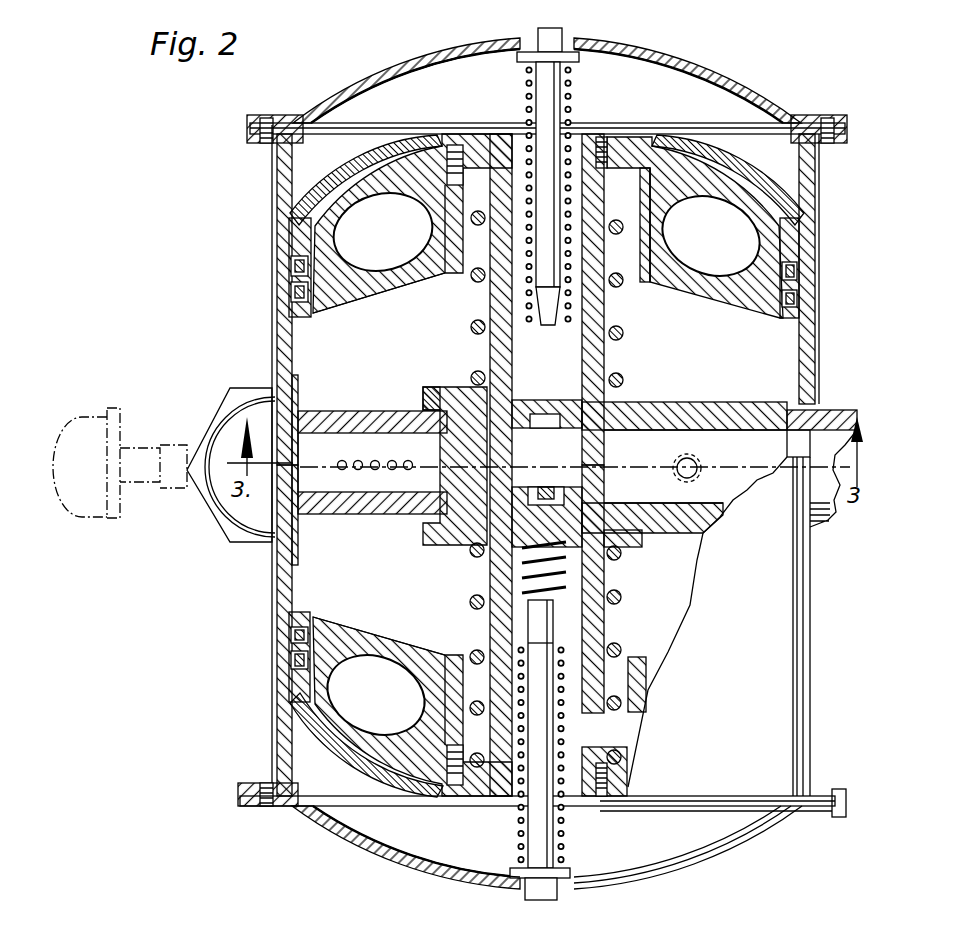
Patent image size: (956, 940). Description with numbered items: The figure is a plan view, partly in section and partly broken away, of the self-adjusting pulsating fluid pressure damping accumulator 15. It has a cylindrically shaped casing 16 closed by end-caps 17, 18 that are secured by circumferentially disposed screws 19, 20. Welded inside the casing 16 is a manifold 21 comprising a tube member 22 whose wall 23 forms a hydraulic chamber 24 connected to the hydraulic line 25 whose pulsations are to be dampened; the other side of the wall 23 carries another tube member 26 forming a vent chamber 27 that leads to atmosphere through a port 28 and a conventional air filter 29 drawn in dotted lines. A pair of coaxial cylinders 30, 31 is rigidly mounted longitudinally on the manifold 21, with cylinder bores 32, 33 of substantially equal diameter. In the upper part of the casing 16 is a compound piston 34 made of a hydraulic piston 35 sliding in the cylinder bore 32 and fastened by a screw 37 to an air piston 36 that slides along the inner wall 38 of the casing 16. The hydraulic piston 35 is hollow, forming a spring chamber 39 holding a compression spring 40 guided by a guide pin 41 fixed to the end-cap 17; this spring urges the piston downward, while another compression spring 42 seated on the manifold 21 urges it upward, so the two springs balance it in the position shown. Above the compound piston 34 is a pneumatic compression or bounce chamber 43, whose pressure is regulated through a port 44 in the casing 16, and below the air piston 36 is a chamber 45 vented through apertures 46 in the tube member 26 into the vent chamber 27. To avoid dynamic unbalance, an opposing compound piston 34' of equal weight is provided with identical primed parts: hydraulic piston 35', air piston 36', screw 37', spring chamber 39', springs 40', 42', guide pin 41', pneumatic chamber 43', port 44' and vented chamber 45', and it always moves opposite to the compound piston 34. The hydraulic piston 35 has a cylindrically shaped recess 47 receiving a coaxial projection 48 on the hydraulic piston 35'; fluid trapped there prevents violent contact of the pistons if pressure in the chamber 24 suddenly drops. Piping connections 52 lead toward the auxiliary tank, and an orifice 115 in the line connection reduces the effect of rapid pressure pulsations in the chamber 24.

The self-adjusting pulsating fluid pressure damping accumulator 15 is at (760, 80).
The casing 16 is at (816, 186).
The end-cap 17 is at (410, 63).
The end-cap 18 is at (413, 863).
The screws 19 is at (270, 115).
The screws 20 is at (260, 808).
The manifold 21 is at (650, 394).
The tube member 22 is at (712, 402).
The wall 23 is at (452, 397).
The hydraulic chamber 24 is at (642, 484).
The hydraulic line 25 is at (834, 412).
The tube member 26 is at (370, 507).
The vent chamber 27 is at (425, 480).
The port 28 is at (303, 473).
The air filter 29 is at (129, 414).
The cylinder 30 is at (607, 325).
The cylinder 31 is at (604, 624).
The cylinder bore 32 is at (503, 300).
The cylinder bore 33 is at (602, 565).
The compound piston 34 is at (547, 180).
The opposing compound piston 34' is at (366, 745).
The hydraulic piston 35 is at (632, 271).
The hydraulic piston 35' is at (622, 663).
The air piston 36 is at (548, 240).
The air piston 36' is at (412, 695).
The screw 37 is at (543, 135).
The screw 37' is at (537, 792).
The inner wall 38 is at (800, 322).
The spring chamber 39 is at (638, 303).
The spring chamber 39' is at (452, 655).
The compression spring 40 is at (574, 193).
The compression spring 40' is at (572, 702).
The guide pin 41 is at (524, 176).
The guide pin 41' is at (516, 750).
The compression spring 42 is at (447, 298).
The compression spring 42' is at (636, 655).
The pneumatic compression chamber 43 is at (503, 86).
The pneumatic chamber 43' is at (416, 841).
The port 44 is at (255, 295).
The port 44' is at (250, 635).
The chamber 45 is at (379, 322).
The chamber 45' is at (379, 608).
The apertures 46 is at (390, 459).
The cylindrically shaped recess 47 is at (542, 428).
The cylindrically shaped projection 48 is at (567, 477).
The piping connections 52 is at (219, 551).
The orifice 115 is at (680, 470).